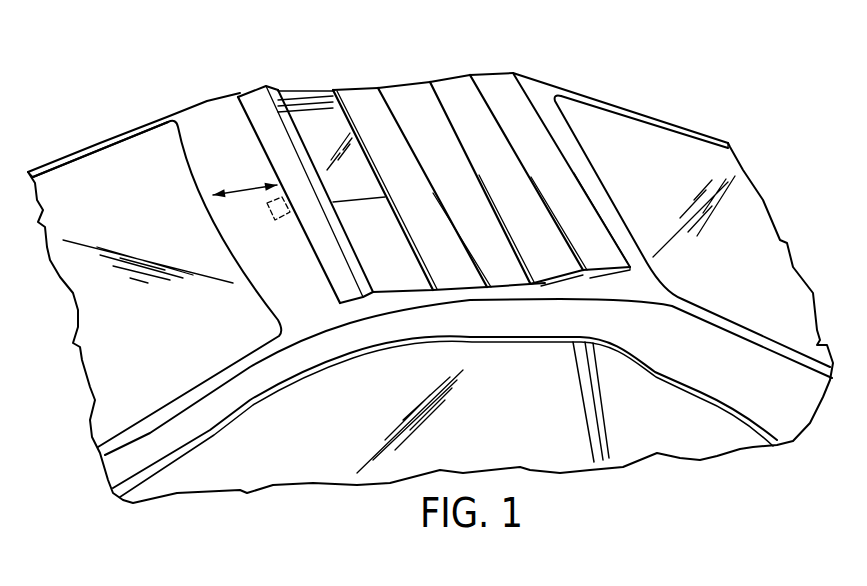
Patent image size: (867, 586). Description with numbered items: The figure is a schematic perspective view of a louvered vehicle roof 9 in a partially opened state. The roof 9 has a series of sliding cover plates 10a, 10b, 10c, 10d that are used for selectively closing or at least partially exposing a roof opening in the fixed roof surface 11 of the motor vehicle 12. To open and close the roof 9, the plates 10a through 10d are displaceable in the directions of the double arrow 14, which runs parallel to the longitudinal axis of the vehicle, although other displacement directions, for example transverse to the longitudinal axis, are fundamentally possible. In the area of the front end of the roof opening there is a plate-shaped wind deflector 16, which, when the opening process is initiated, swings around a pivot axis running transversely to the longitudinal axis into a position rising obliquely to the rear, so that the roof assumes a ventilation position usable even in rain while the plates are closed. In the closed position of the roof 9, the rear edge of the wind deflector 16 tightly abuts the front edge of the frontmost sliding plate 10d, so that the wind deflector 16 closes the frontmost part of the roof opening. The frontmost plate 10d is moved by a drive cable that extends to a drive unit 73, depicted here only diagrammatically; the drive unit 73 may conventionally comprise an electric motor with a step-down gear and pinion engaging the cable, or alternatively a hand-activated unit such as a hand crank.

The vehicle roof 9 is at (600, 86).
The sliding cover plate 10a is at (508, 95).
The sliding cover plate 10b is at (462, 102).
The sliding cover plate 10c is at (413, 105).
The sliding cover plate 10d is at (365, 108).
The fixed roof surface 11 is at (217, 117).
The motor vehicle 12 is at (658, 472).
The double arrow 14 is at (240, 189).
The wind deflector 16 is at (266, 108).
The drive unit 73 is at (285, 222).